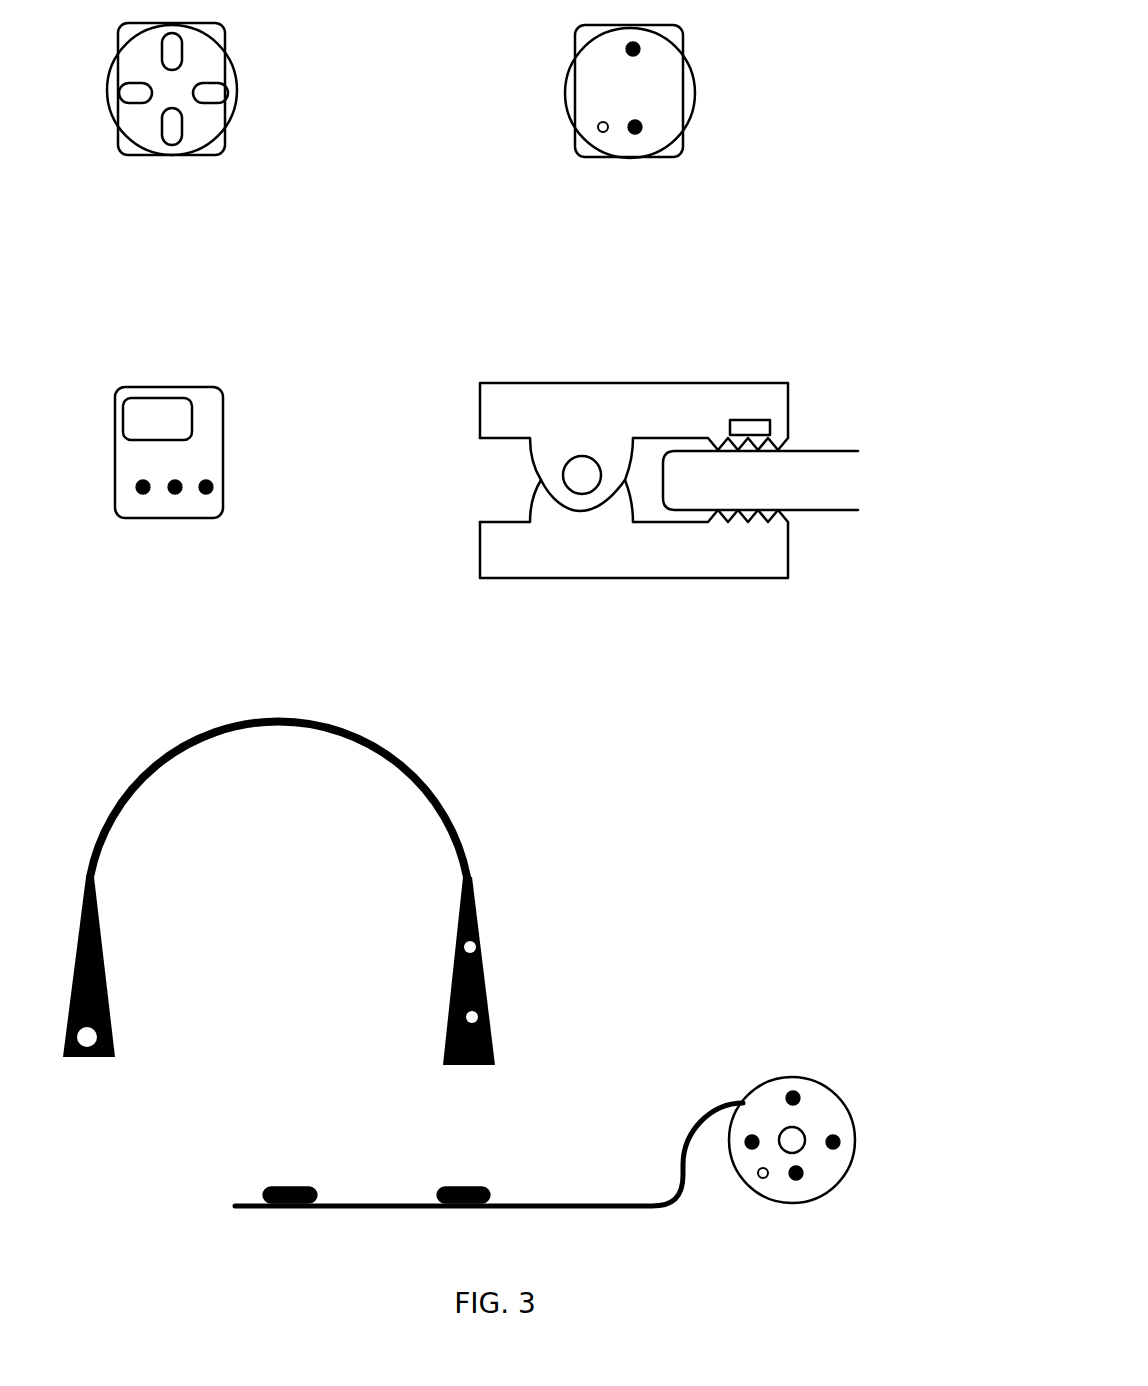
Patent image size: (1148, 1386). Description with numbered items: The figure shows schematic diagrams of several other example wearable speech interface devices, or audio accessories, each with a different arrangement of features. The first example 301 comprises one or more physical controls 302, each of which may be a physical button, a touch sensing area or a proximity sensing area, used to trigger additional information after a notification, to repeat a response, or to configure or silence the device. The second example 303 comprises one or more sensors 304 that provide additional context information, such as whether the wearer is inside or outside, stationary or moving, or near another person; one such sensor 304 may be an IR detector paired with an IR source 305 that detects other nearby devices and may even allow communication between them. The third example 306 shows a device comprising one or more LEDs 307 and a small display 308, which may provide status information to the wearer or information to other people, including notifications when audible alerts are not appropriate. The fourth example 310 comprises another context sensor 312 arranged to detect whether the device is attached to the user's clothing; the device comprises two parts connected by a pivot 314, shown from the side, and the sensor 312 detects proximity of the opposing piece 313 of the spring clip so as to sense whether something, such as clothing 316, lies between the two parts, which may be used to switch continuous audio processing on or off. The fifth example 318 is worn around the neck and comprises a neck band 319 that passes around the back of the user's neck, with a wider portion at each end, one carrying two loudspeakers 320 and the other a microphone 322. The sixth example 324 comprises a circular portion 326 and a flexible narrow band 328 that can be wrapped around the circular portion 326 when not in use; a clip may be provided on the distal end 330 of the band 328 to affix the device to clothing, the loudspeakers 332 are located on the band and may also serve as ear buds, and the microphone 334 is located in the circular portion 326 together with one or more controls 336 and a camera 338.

The first example 301 is at (237, 80).
The physical controls 302 is at (183, 125).
The second example 303 is at (694, 81).
The sensors 304 is at (638, 130).
The IR source 305 is at (604, 133).
The third example 306 is at (223, 440).
The LEDs 307 is at (178, 490).
The display 308 is at (157, 419).
The fourth example 310 is at (651, 413).
The context sensor 312 is at (771, 421).
The opposing piece 313 is at (770, 560).
The pivot 314 is at (583, 478).
The clothing 316 is at (760, 480).
The fifth example 318 is at (310, 872).
The neck band 319 is at (410, 762).
The loudspeakers 320 is at (476, 946).
The microphone 322 is at (88, 1048).
The sixth example 324 is at (803, 1107).
The circular portion 326 is at (855, 1128).
The flexible narrow band 328 is at (627, 1208).
The distal end 330 is at (461, 1189).
The loudspeakers 332 is at (308, 1189).
The microphone 334 is at (766, 1178).
The controls 336 is at (800, 1178).
The camera 338 is at (797, 1143).